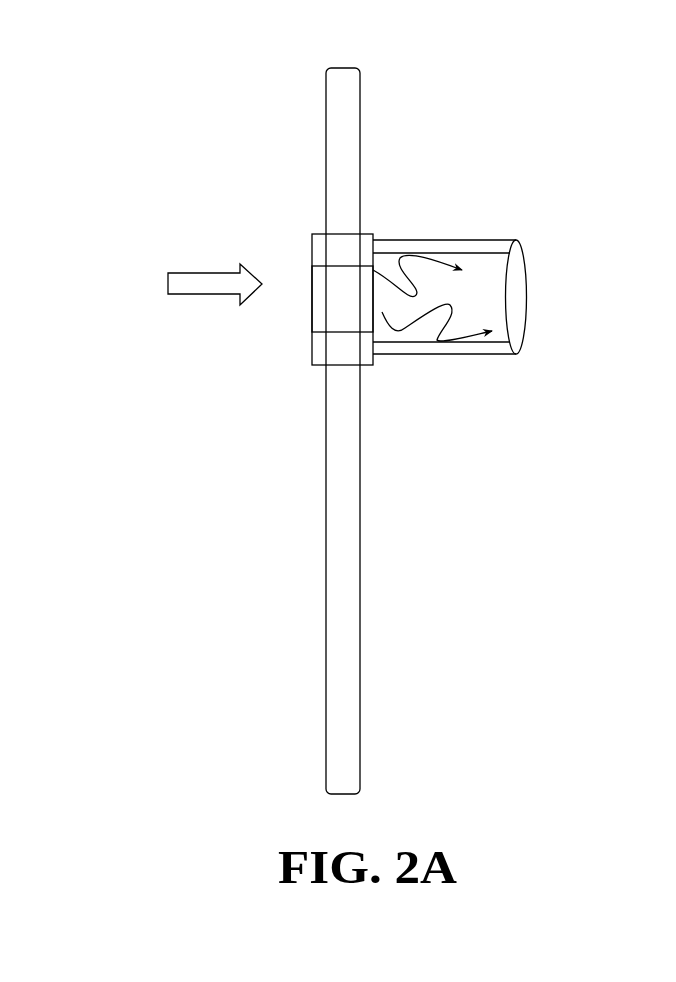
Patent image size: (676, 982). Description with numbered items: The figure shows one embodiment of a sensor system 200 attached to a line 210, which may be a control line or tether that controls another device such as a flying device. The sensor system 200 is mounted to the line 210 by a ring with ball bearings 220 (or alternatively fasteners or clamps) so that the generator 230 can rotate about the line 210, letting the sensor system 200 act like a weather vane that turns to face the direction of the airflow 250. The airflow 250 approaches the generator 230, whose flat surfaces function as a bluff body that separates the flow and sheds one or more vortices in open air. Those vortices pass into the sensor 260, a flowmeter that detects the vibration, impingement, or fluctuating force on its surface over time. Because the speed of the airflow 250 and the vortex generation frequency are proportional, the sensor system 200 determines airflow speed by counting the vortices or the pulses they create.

The sensor system 200 is at (507, 145).
The line 210 is at (326, 647).
The ring with ball bearings 220 is at (312, 363).
The generator 230 is at (312, 308).
The airflow 250 is at (168, 283).
The sensor 260 is at (526, 270).